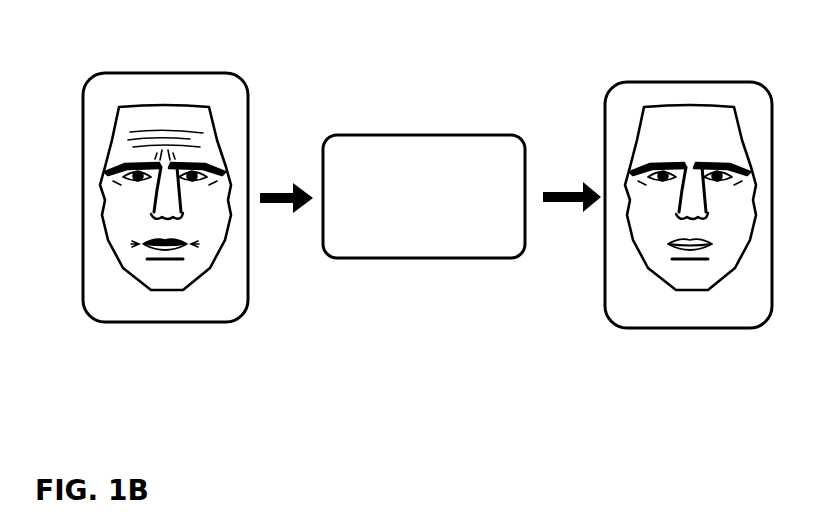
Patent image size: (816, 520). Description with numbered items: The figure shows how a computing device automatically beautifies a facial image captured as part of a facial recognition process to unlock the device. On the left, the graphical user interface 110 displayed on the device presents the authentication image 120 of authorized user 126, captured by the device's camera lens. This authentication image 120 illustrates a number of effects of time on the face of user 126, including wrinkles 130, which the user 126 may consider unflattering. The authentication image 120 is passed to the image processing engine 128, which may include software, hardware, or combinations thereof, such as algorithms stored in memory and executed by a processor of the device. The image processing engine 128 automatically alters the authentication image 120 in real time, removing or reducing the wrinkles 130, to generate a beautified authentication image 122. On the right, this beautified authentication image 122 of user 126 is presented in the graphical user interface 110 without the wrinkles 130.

The graphical user interface 110 is at (112, 73).
The authentication image 120 is at (104, 178).
The beautified authentication image 122 is at (628, 168).
The authorized user 126 is at (405, 156).
The image processing engine 128 is at (407, 243).
The wrinkles 130 is at (192, 242).